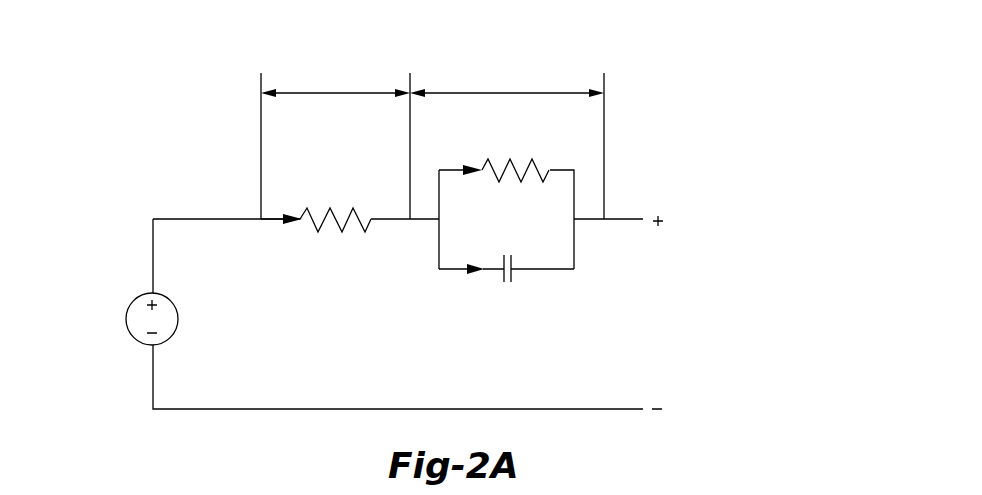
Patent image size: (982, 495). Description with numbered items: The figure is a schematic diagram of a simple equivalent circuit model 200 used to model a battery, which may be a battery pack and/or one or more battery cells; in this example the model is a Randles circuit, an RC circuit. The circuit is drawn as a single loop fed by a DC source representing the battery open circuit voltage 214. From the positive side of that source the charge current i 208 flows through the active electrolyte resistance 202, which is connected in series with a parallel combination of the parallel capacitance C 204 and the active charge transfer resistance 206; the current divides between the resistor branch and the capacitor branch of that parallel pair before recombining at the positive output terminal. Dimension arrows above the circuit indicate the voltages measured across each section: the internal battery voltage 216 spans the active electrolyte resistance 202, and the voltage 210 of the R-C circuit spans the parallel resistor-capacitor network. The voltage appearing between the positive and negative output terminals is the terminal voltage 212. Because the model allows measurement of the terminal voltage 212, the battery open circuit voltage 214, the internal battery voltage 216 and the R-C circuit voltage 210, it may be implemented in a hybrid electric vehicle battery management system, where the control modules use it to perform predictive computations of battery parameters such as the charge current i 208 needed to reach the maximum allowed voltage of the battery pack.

The simple equivalent circuit model 200 is at (155, 80).
The active electrolyte resistance r1 202 is at (353, 212).
The parallel capacitance C 204 is at (512, 278).
The active charge transfer resistance r2 206 is at (533, 162).
The charge current i 208 is at (237, 205).
The voltage v2 of the R-C circuit 210 is at (512, 62).
The terminal voltage vt 212 is at (655, 316).
The battery open circuit voltage vDC 214 is at (141, 296).
The internal battery voltage v1 216 is at (328, 63).